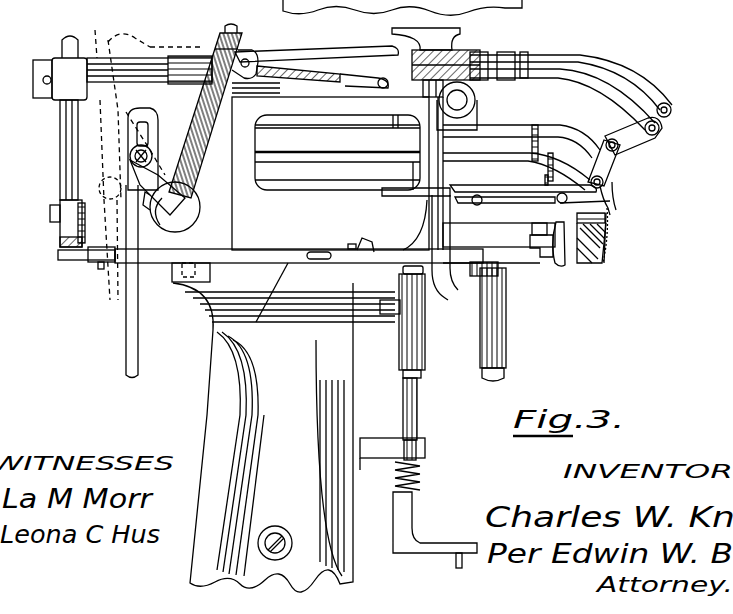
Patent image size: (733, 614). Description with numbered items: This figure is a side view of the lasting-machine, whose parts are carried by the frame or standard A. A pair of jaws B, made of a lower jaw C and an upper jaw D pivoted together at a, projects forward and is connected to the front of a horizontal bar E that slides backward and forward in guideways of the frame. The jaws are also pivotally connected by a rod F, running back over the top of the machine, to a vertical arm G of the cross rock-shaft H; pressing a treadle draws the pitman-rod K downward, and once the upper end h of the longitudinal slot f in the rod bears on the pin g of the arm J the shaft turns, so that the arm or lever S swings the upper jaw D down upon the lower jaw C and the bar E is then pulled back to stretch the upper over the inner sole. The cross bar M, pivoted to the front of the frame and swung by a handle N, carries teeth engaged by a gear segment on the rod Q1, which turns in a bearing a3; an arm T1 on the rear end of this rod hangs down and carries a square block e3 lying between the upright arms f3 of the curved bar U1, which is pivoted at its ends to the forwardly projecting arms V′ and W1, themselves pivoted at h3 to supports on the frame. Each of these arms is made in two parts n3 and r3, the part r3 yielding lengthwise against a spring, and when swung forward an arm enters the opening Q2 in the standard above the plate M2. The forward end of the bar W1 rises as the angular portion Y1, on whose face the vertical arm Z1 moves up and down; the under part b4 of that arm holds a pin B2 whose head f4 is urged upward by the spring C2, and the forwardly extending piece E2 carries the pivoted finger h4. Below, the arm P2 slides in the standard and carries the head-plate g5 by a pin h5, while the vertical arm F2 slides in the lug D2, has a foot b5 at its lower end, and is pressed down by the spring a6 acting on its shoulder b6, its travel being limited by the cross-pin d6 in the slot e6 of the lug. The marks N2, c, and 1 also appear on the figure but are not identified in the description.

The rod Q1 is at (146, 45).
The bearing a3 is at (199, 56).
The vertical arm G is at (204, 102).
The upper end of slot h is at (128, 113).
The longitudinal slot f is at (137, 134).
The pin g is at (130, 154).
The arm J is at (142, 187).
The arm T1 is at (62, 141).
The square plate or block e3 is at (52, 206).
The upright arms f3 is at (62, 237).
The curved horizontal bar U1 is at (59, 262).
The pivot h3 is at (99, 270).
The pitman-rod K is at (126, 333).
The part of frame M2 is at (202, 274).
The horizontal cross rock-shaft H is at (195, 211).
The arm part n3 is at (240, 256).
The arm V′ is at (262, 248).
The horizontal opening Q2 is at (227, 301).
The stop N2 is at (360, 249).
The arm part r3 is at (374, 254).
The angular upward portion Y1 is at (482, 229).
The horizontal forwardly-extending piece E2 is at (450, 203).
The handle N is at (438, 107).
The cross horizontal bar M is at (470, 96).
The horizontal bar E is at (488, 140).
The rod F is at (560, 58).
The arm or lever S is at (628, 133).
The pivot a is at (592, 171).
The pair of jaws B is at (605, 185).
The pin 1 is at (613, 191).
The upper jaw D is at (610, 200).
The lower jaw C is at (608, 212).
The finger h4 is at (608, 235).
The arm W1 is at (478, 206).
The pin h5 is at (530, 237).
The head-plate g5 is at (574, 255).
The plate c is at (555, 199).
The vertical arm Z1 is at (450, 288).
The arm P2 is at (508, 256).
The head of pin f4 is at (403, 273).
The under part of arm b4 is at (426, 331).
The pin B2 is at (537, 363).
The frame or standard A is at (271, 437).
The vertical arm F2 is at (418, 401).
The cross-pin d6 is at (418, 441).
The lug D2 is at (426, 447).
The socket or slot e6 is at (395, 469).
The spring a6 is at (422, 469).
The shoulder b6 is at (422, 496).
The forwardly-projecting foot b5 is at (428, 543).
The spring C2 is at (456, 564).